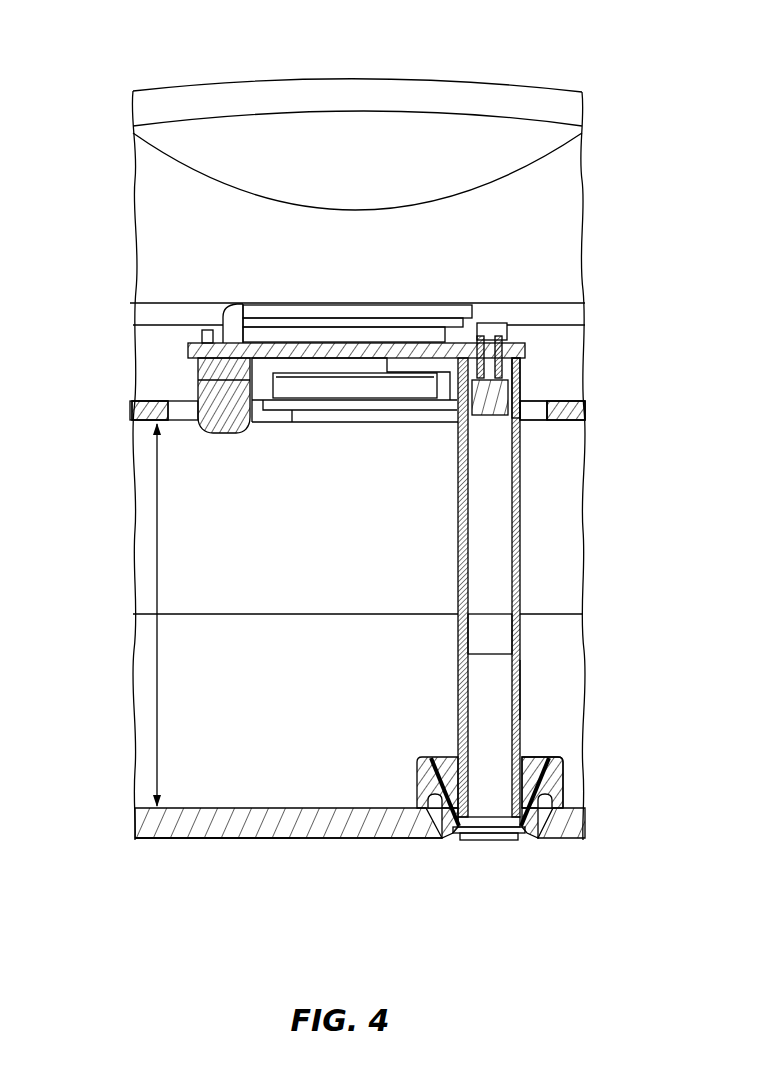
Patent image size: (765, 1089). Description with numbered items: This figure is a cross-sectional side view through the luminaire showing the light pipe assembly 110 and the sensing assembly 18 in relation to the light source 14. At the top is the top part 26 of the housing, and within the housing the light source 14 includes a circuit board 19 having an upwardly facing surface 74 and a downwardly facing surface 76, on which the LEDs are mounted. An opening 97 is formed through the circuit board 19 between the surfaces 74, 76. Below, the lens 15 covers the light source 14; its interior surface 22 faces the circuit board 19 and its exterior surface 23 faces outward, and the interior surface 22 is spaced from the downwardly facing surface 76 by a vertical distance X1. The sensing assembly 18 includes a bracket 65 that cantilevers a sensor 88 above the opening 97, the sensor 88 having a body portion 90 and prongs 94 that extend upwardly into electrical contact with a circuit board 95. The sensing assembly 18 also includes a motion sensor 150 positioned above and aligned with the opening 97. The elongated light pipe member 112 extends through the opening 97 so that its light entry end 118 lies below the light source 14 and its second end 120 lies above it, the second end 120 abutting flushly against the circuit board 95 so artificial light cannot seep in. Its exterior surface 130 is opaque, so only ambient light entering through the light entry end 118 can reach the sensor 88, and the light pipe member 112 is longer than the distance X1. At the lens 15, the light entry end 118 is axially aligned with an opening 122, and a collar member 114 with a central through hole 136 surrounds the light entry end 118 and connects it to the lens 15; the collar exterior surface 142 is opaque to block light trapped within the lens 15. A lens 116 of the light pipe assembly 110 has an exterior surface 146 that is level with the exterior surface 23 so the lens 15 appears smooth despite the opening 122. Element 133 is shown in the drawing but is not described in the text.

The top part 26 is at (228, 100).
The bracket 65 is at (262, 300).
The sensing assembly 18 is at (192, 306).
The upwardly facing surface 74 is at (157, 400).
The light source 14 is at (126, 412).
The motion sensor 150 is at (225, 437).
The vertical distance X1 is at (115, 615).
The prongs 94 is at (481, 335).
The circuit board 95 is at (509, 321).
The second end 120 is at (524, 356).
The sensor 88 is at (524, 390).
The circuit board 19 is at (586, 414).
The downwardly facing surface 76 is at (567, 421).
The opening 97 is at (533, 414).
The body portion 90 is at (489, 418).
The exterior surface 130 is at (521, 578).
The elongated light pipe member 112 is at (524, 629).
The light pipe assembly 110 is at (548, 680).
The through hole 136 is at (446, 752).
The seal member 133 is at (439, 752).
The interior surface 22 is at (264, 806).
The exterior surface 23 is at (232, 842).
The lens 15 is at (180, 842).
The light entry end 118 is at (544, 756).
The exterior surface 142 is at (562, 772).
The collar member 114 is at (566, 785).
The opening 122 is at (440, 846).
The exterior surface 146 is at (485, 842).
The lens 116 is at (503, 845).